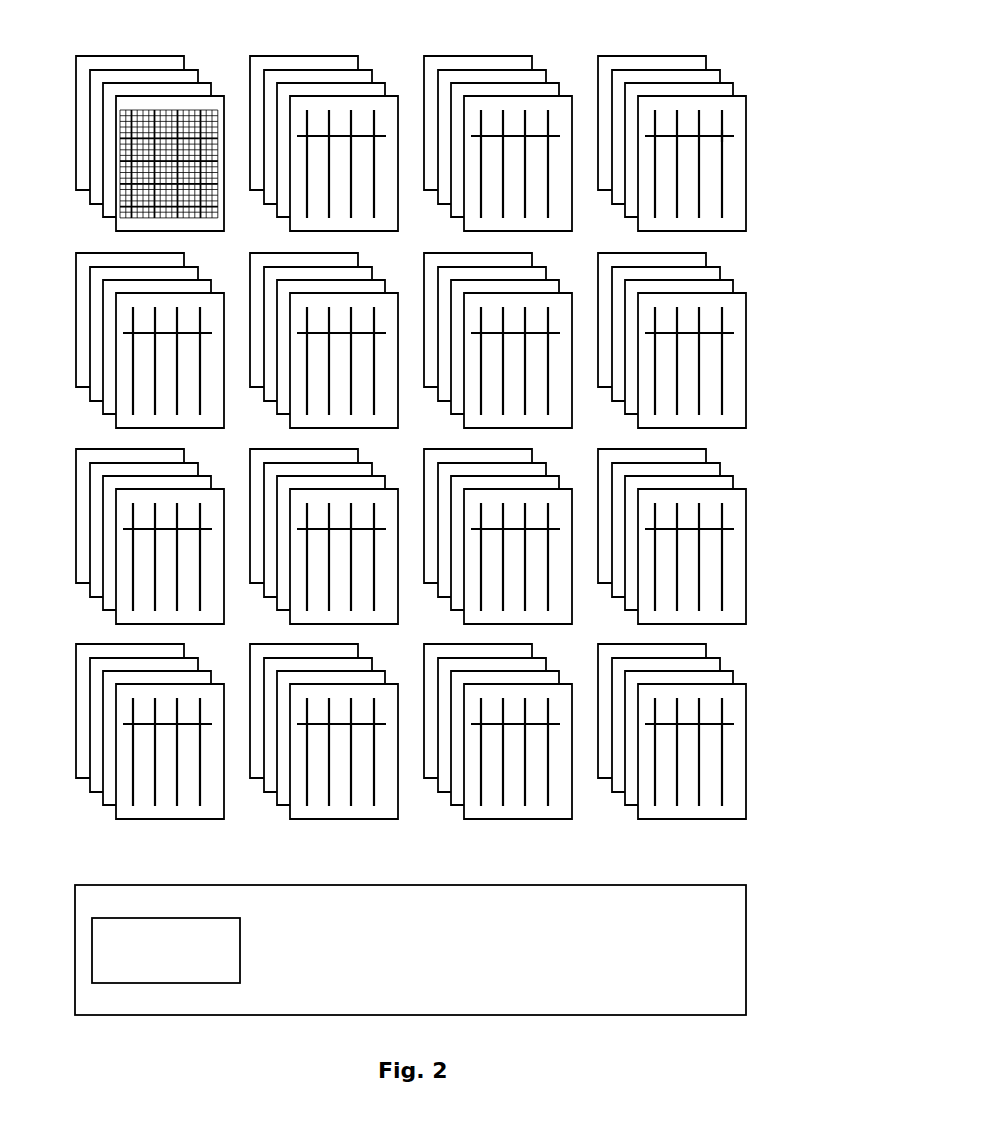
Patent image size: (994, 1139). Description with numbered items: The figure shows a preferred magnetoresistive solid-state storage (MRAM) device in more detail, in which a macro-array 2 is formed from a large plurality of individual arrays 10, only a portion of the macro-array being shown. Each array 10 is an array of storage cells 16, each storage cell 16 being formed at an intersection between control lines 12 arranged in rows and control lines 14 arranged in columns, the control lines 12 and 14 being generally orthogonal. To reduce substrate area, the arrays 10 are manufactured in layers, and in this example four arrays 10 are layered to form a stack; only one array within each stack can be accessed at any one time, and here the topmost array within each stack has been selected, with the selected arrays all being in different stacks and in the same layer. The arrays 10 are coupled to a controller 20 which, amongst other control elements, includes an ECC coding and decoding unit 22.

The macro-array 2 is at (79, 822).
The array 10 is at (722, 230).
The control line 12 is at (732, 133).
The control line 14 is at (720, 110).
The storage cell 16 is at (724, 137).
The controller 20 is at (523, 1015).
The ECC coding and decoding unit 22 is at (240, 952).